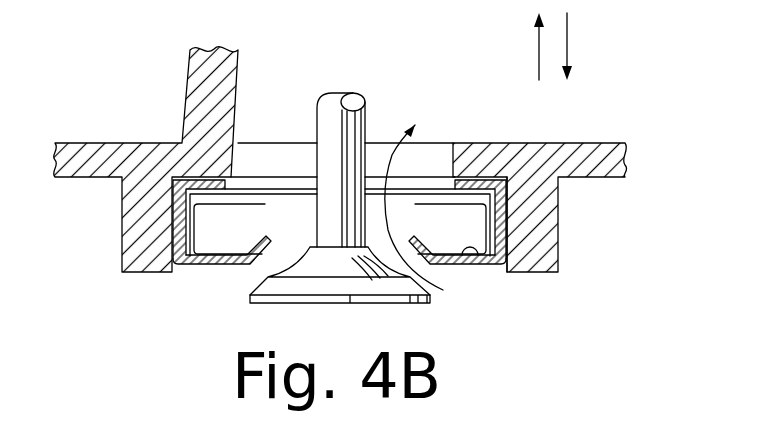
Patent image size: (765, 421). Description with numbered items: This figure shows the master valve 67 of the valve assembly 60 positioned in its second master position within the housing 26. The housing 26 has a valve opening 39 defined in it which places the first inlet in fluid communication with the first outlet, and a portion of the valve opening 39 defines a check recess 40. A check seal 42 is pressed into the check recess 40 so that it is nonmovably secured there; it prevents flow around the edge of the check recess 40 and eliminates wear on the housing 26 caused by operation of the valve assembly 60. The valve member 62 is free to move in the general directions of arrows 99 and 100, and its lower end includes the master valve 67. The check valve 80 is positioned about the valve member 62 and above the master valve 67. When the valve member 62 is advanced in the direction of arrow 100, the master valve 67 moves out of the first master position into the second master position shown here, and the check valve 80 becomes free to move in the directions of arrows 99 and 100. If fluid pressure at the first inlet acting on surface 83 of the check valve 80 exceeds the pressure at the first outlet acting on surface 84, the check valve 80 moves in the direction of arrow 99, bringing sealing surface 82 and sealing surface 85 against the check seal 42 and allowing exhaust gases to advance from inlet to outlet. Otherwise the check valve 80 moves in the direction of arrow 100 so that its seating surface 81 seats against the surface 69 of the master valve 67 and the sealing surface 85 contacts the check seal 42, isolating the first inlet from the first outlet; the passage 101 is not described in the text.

The housing 26 is at (538, 143).
The valve opening 39 is at (450, 160).
The check recess 40 is at (183, 272).
The check seal 42 is at (507, 218).
The valve assembly 60 is at (328, 194).
The valve member 62 is at (355, 122).
The master valve 67 is at (377, 287).
The surface 69 is at (250, 288).
The check valve 80 is at (338, 262).
The seating surface 81 is at (270, 250).
The sealing surface 82 is at (203, 178).
The surface 83 is at (462, 265).
The surface 84 is at (478, 255).
The sealing surface 85 is at (186, 219).
The arrow 99 is at (539, 50).
The arrow 100 is at (568, 37).
The flow passage 101 is at (387, 213).